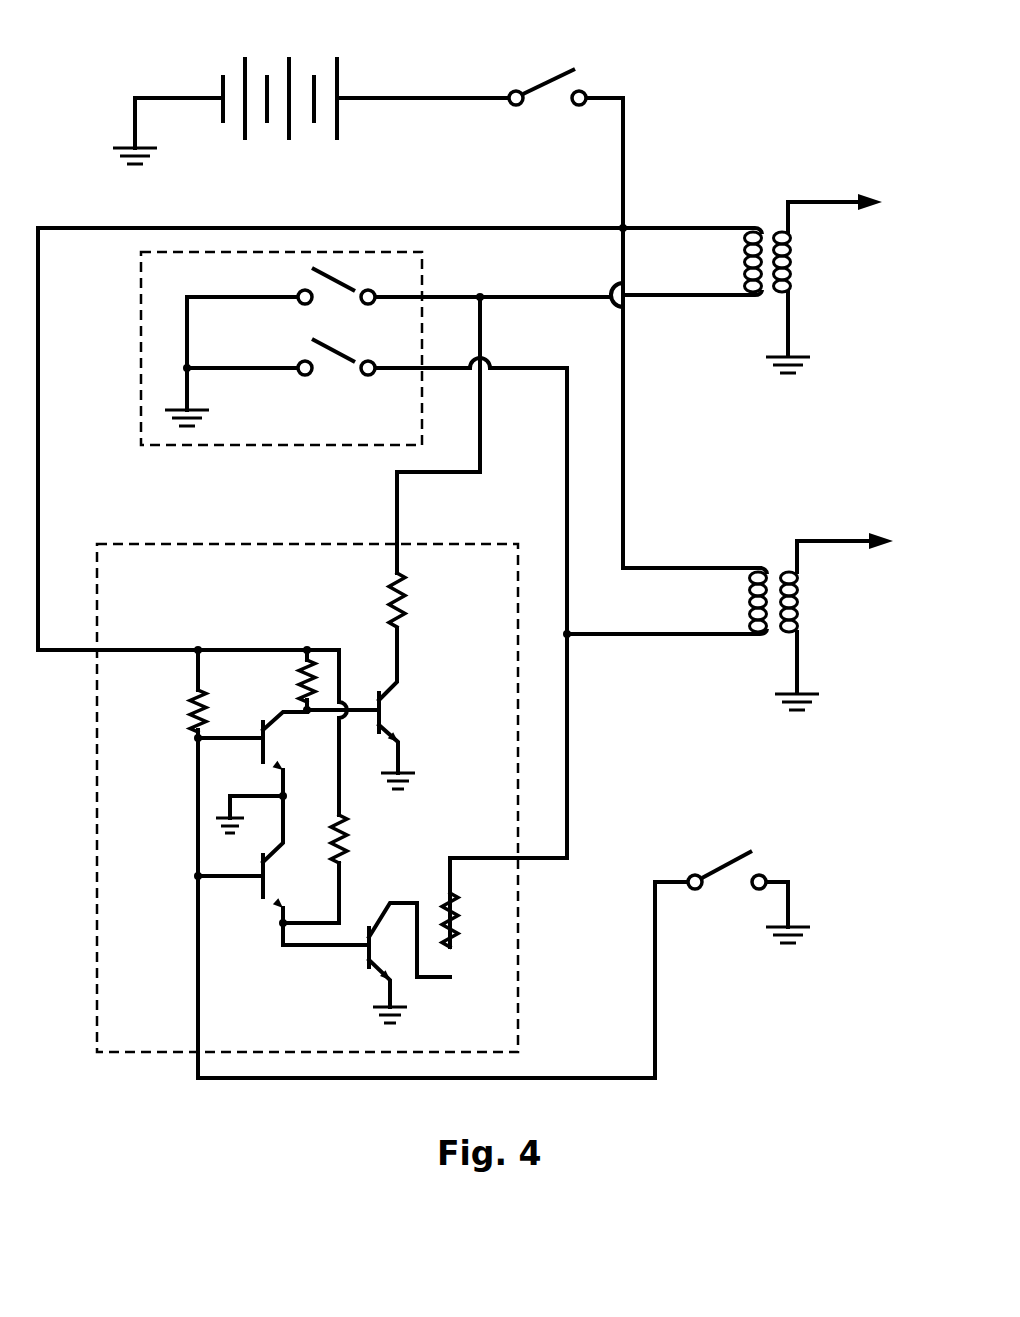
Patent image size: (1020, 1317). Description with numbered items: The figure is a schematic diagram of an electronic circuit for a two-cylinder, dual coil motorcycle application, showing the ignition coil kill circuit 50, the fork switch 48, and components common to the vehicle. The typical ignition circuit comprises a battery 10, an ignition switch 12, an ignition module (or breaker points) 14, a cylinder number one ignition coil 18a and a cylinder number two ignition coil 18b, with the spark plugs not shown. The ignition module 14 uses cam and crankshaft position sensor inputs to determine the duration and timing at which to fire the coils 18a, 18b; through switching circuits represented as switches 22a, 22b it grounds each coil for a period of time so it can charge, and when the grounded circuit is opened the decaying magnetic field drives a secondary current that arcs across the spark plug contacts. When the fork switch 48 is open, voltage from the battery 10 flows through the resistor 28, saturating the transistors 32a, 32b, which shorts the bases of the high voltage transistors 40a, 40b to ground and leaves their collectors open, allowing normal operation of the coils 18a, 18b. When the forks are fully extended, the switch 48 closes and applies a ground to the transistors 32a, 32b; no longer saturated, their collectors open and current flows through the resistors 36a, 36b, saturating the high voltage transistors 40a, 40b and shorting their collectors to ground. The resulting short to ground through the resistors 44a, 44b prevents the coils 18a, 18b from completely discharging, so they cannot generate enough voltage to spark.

The battery 10 is at (289, 57).
The ignition switch 12 is at (553, 96).
The ignition module 14 is at (126, 274).
The switch 22a is at (334, 302).
The switch 22b is at (332, 370).
The cylinder #1 ignition coil 18a is at (791, 250).
The cylinder #2 ignition coil 18b is at (800, 593).
The ignition coil kill circuit 50 is at (129, 531).
The resistor 28 is at (192, 710).
The resistor 36a is at (300, 679).
The resistor 36b is at (348, 830).
The transistor 32a is at (266, 740).
The transistor 32b is at (264, 895).
The high voltage transistor 40a is at (385, 712).
The high voltage transistor 40b is at (370, 968).
The resistor 44a is at (408, 588).
The resistor 44b is at (446, 905).
The fork switch 48 is at (702, 886).